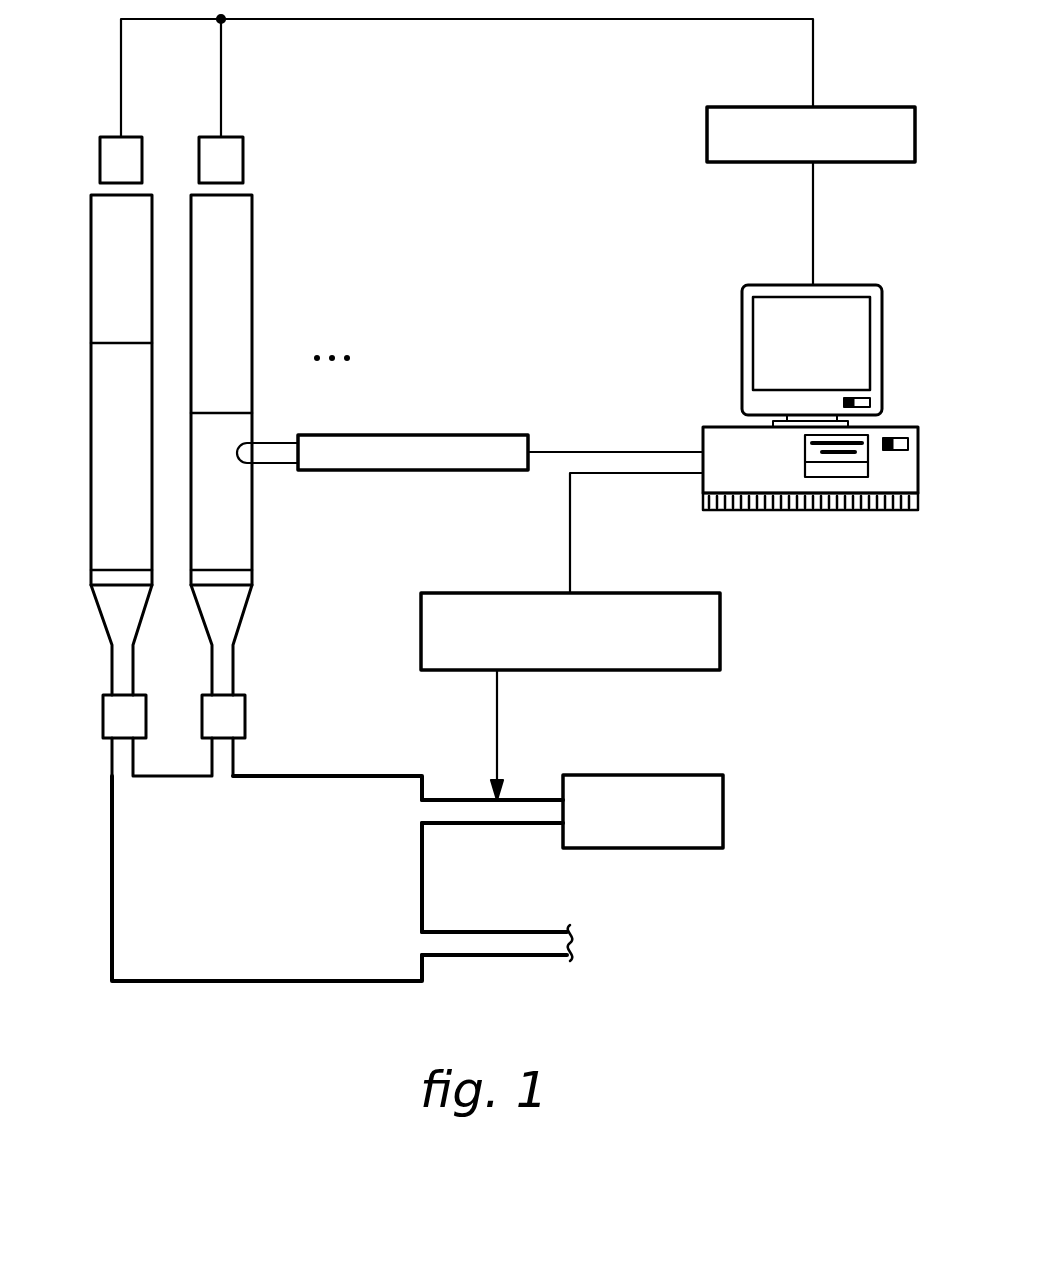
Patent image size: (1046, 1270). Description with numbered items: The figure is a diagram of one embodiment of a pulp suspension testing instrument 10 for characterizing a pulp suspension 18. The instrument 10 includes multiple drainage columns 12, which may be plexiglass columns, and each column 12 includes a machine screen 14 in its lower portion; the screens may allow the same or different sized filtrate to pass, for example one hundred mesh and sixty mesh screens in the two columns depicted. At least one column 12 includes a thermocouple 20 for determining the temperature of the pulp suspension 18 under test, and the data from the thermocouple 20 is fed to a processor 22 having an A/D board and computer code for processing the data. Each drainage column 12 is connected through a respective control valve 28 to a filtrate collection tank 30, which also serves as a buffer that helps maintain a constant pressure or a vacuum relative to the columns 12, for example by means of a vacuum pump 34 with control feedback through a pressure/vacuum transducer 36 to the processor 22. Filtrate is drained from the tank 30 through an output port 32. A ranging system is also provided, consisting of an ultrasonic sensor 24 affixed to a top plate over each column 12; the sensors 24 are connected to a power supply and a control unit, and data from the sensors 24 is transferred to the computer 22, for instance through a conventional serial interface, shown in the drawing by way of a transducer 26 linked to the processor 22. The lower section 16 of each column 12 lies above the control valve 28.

The pulp suspension testing instrument 10 is at (491, 189).
The drainage column 12 is at (90, 220).
The machine screen 14 is at (94, 586).
The filter medium section 16 is at (92, 572).
The pulp suspension 18 is at (92, 382).
The thermocouple 20 is at (435, 435).
The processor 22 is at (742, 345).
The ultrasonic sensor 24 is at (112, 135).
The transducer 26 is at (707, 138).
The control valve 28 is at (104, 716).
The filtrate collection tank 30 is at (110, 946).
The output port 32 is at (508, 932).
The vacuum pump 34 is at (644, 775).
The pressure/vacuum transducer 36 is at (526, 593).